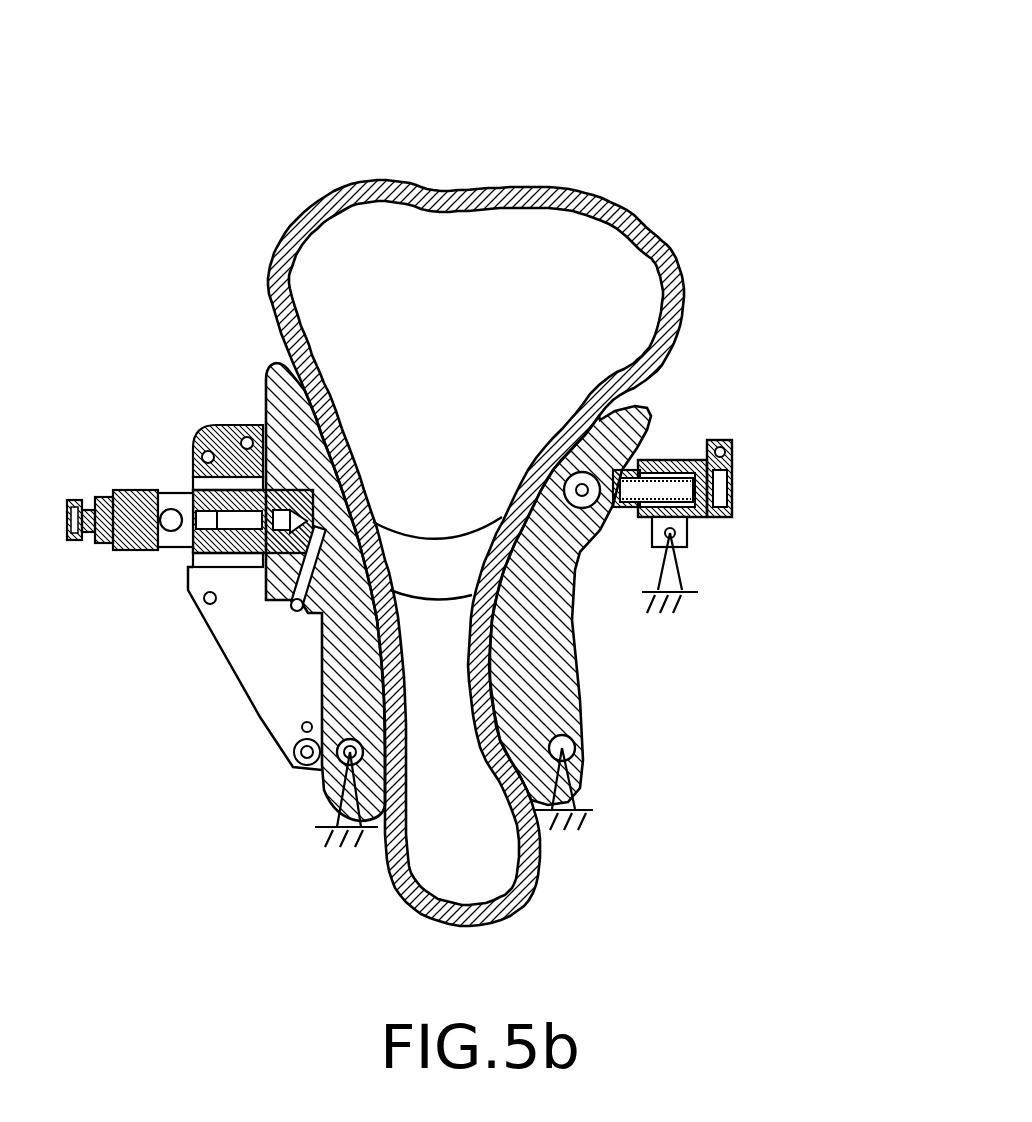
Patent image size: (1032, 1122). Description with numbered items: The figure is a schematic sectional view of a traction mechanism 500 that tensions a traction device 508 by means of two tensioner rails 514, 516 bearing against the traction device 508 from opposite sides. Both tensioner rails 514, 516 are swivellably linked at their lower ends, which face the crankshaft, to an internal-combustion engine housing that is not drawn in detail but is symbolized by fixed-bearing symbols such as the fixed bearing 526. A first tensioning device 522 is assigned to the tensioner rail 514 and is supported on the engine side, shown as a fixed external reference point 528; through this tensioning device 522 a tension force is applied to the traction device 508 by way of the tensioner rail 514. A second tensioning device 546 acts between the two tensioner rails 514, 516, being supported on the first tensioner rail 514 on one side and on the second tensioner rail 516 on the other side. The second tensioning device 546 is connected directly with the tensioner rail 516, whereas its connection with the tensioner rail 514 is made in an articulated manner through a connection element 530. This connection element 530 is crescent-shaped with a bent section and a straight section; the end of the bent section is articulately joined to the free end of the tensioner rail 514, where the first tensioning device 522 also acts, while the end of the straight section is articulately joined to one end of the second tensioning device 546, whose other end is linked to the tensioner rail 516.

The traction mechanism 500 is at (706, 168).
The traction device 508 is at (426, 196).
The tensioner rail 514 is at (551, 647).
The tensioner rail 516 is at (342, 674).
The first tensioning device 522 is at (730, 440).
The fixed-bearing symbol 526 is at (322, 838).
The fixed reference point 528 is at (698, 599).
The connection element 530 is at (429, 575).
The second tensioning device 546 is at (168, 496).